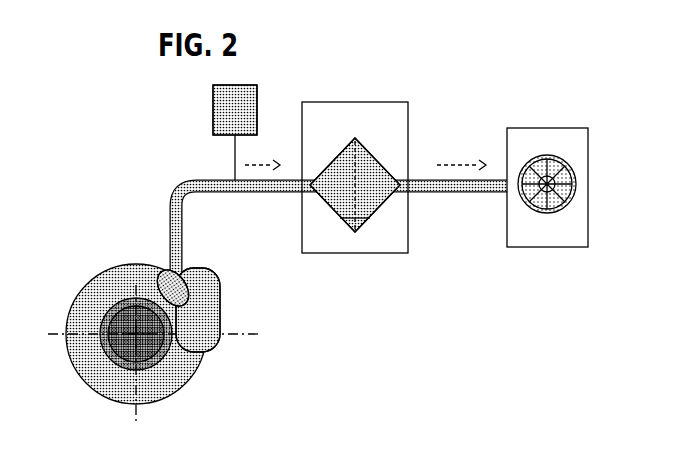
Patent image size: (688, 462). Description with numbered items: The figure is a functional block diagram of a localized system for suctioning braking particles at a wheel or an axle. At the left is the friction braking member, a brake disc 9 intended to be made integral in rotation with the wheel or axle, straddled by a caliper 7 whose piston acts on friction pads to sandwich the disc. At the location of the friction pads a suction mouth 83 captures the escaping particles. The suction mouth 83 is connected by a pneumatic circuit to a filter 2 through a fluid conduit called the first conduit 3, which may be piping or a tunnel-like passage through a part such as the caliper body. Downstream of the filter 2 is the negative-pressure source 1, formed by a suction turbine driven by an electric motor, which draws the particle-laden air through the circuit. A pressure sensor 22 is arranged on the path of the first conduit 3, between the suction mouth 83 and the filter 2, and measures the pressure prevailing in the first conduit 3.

The negative-pressure source 1 is at (549, 116).
The filter 2 is at (373, 97).
The first conduit 3 is at (179, 193).
The caliper 7 is at (224, 311).
The brake disc 9 is at (100, 263).
The pressure sensor 22 is at (213, 97).
The suction mouth 83 is at (204, 272).